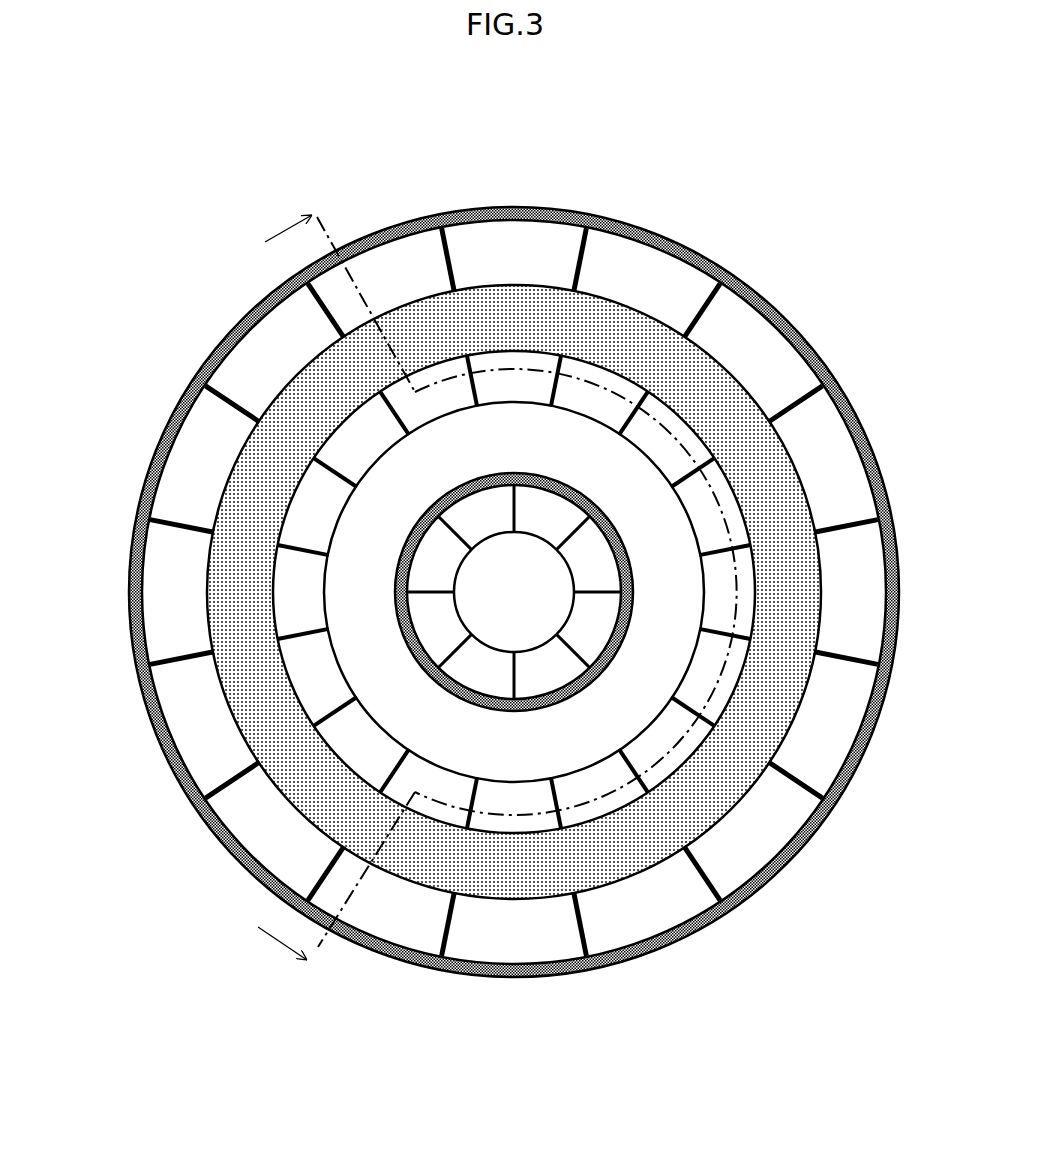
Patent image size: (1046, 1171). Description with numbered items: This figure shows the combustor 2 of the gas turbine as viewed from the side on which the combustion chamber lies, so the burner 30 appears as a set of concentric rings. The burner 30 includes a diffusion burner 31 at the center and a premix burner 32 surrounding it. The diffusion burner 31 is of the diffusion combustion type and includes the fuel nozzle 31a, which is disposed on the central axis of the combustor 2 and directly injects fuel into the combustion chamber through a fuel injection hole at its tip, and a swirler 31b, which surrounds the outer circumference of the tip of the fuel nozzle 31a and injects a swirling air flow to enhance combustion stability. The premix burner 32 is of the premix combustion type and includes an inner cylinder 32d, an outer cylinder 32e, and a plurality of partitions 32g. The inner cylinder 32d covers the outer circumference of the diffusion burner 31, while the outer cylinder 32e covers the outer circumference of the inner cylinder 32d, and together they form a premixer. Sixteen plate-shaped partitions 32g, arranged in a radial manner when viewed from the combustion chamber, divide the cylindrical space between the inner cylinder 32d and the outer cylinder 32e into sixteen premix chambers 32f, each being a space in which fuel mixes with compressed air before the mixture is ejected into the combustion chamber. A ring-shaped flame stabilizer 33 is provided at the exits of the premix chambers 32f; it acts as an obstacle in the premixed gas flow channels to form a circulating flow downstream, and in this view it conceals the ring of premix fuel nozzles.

The combustor 2 is at (592, 202).
The burner 30 is at (420, 1083).
The diffusion burner 31 is at (514, 714).
The fuel nozzle 31a is at (567, 618).
The swirler 31b is at (634, 584).
The premix burner 32 is at (514, 979).
The inner cylinder 32d is at (322, 592).
The outer cylinder 32e is at (131, 592).
The premix chambers 32f is at (502, 266).
The partitions 32g is at (593, 265).
The flame stabilizer 33 is at (822, 593).